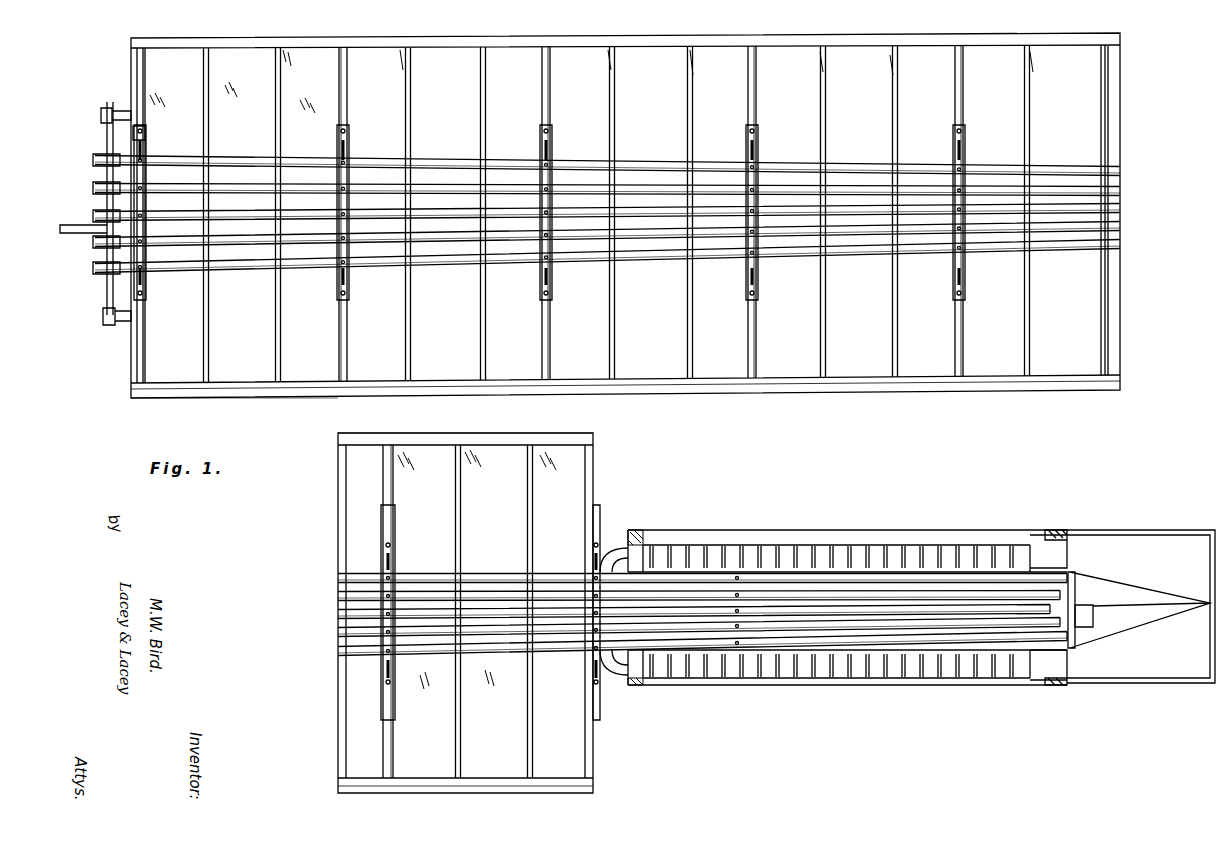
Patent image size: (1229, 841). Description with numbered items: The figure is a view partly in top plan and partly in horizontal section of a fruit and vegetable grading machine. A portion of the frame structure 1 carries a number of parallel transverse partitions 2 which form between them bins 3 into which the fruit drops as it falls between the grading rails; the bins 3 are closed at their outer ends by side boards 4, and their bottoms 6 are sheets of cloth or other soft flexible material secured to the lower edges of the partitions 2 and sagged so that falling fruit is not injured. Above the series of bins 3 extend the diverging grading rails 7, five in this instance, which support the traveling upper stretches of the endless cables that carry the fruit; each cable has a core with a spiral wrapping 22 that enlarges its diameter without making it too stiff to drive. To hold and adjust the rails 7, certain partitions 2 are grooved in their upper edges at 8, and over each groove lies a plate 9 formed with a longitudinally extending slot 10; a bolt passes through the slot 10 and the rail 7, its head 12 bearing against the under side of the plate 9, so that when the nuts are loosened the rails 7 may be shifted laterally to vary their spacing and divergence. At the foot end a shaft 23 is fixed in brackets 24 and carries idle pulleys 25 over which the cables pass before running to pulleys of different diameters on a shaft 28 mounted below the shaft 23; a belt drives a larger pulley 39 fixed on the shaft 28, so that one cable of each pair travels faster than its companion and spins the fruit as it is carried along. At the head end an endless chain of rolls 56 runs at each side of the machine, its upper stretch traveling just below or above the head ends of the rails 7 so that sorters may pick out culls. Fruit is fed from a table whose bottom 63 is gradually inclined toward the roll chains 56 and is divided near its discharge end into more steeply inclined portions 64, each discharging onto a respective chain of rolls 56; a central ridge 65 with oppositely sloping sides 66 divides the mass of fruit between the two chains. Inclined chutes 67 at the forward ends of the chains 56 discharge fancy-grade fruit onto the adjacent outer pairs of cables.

The frame structure 1 is at (807, 391).
The transverse partitions 2 is at (747, 338).
The bins 3 is at (957, 44).
The side boards 4 is at (240, 393).
The bin bottoms 6 is at (570, 505).
The grading rails 7 is at (781, 194).
The recess or groove 8 is at (963, 350).
The plate 9 is at (972, 295).
The slot 10 is at (964, 271).
The bolt head 12 is at (963, 339).
The spiral wrapping 22 is at (869, 207).
The shaft 23 is at (108, 124).
The brackets 24 is at (108, 322).
The idle pulleys 25 is at (105, 268).
The shaft 28 is at (145, 136).
The pulley 39 is at (73, 224).
The chain of rolls 56 is at (908, 548).
The table bottom 63 is at (1128, 545).
The inclined portions 64 is at (1045, 546).
The ridge 65 is at (1160, 594).
The ridge sides 66 is at (1113, 622).
The inclined chutes 67 is at (620, 667).